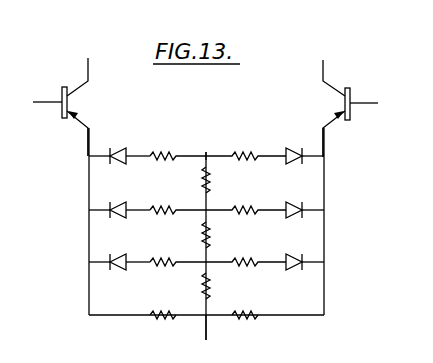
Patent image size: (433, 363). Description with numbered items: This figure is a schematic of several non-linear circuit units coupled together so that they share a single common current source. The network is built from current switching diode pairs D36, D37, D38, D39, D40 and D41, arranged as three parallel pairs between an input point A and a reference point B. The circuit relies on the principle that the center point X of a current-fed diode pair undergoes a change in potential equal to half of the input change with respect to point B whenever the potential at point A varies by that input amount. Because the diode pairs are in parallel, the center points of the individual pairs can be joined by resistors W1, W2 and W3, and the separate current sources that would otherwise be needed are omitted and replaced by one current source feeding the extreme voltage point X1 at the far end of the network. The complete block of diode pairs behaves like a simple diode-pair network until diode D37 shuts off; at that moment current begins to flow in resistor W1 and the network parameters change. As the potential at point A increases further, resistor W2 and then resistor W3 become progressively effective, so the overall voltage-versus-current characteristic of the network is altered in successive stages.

The current switching diode D36 is at (147, 143).
The current switching diode D37 is at (265, 143).
The current switching diode D38 is at (147, 197).
The current switching diode D39 is at (265, 197).
The current switching diode D40 is at (147, 249).
The current switching diode D41 is at (265, 249).
The resistor W1 is at (223, 183).
The resistor W2 is at (223, 237).
The resistor W3 is at (223, 288).
The point A is at (96, 135).
The point B is at (313, 136).
The center point X is at (205, 147).
The extreme voltage point X1 is at (191, 331).